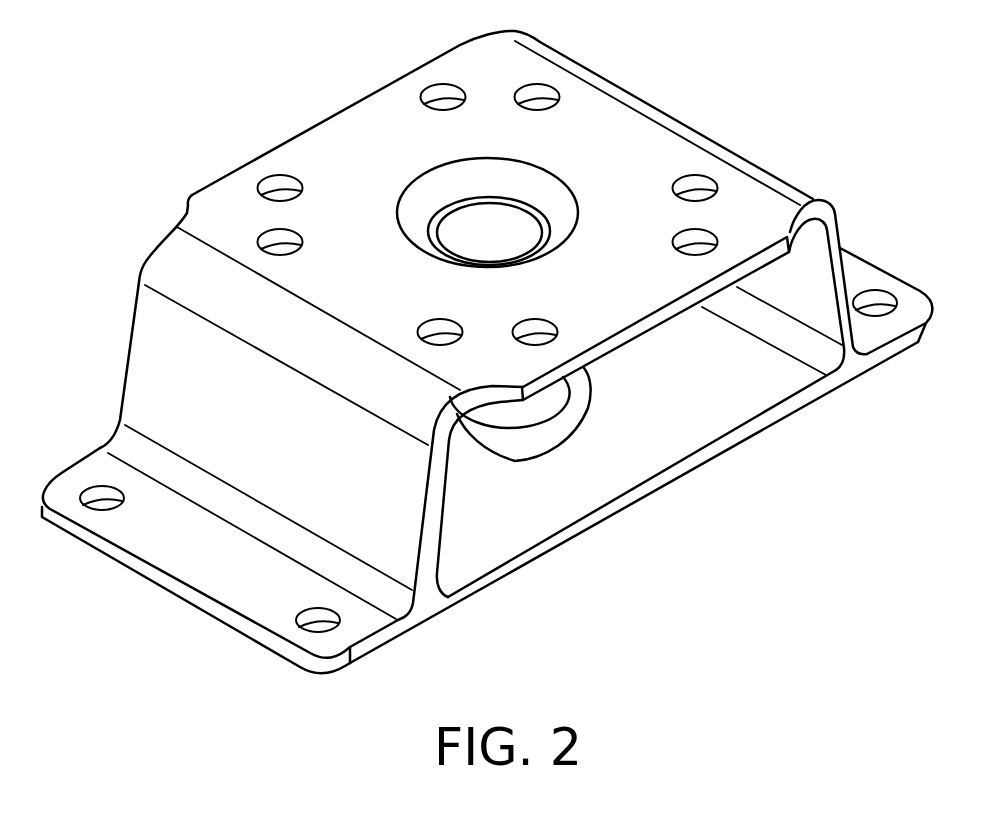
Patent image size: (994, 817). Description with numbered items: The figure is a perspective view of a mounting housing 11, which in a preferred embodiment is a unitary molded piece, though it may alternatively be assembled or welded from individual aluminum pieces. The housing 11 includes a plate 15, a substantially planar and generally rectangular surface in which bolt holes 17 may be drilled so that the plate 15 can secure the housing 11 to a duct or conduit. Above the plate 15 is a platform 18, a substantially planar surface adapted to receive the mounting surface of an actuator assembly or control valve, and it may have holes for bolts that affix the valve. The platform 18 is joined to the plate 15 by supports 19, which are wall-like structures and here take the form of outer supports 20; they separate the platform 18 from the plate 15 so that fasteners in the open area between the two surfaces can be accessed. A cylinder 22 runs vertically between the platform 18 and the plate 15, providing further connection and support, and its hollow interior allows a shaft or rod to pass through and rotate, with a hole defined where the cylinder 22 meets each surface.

The mounting housing 11 is at (818, 543).
The plate 15 is at (704, 416).
The bolt holes 17 is at (95, 490).
The platform 18 is at (398, 162).
The supports 19 is at (405, 512).
The outer supports 20 is at (226, 416).
The cylinder 22 is at (512, 410).